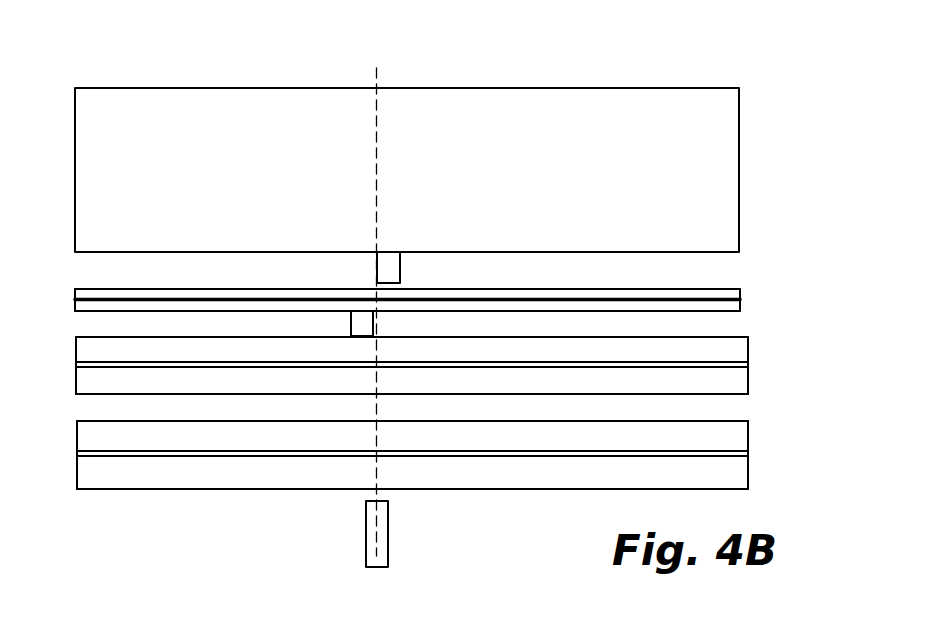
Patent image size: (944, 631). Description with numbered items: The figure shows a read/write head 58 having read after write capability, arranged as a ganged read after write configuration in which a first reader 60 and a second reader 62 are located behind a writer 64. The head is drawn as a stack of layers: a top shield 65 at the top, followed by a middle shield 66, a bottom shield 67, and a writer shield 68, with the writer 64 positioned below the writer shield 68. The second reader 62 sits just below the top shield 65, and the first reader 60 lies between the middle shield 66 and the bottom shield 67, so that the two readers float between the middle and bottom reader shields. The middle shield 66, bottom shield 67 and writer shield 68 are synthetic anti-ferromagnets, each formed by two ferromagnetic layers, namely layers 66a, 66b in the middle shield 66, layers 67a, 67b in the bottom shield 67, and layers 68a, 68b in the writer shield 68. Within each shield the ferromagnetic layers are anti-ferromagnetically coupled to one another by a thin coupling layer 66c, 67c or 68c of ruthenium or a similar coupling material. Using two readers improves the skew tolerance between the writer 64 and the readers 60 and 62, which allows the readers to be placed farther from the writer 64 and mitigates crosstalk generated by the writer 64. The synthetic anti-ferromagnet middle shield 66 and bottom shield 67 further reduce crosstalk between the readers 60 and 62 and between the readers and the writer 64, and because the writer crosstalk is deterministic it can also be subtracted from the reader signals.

The read/write head 58 is at (49, 117).
The top shield 65 is at (739, 147).
The second reader 62 is at (400, 268).
The middle shield 66 is at (416, 281).
The ferromagnetic layer 66a is at (733, 292).
The ferromagnetic layer 66b is at (740, 306).
The coupling layer 66c is at (740, 297).
The first reader 60 is at (350, 325).
The bottom shield 67 is at (418, 366).
The ferromagnetic layer 67a is at (748, 340).
The ferromagnetic layer 67b is at (740, 382).
The coupling layer 67c is at (748, 364).
The writer shield 68 is at (418, 460).
The ferromagnetic layer 68a is at (740, 432).
The ferromagnetic layer 68b is at (740, 480).
The coupling layer 68c is at (748, 454).
The writer 64 is at (365, 525).